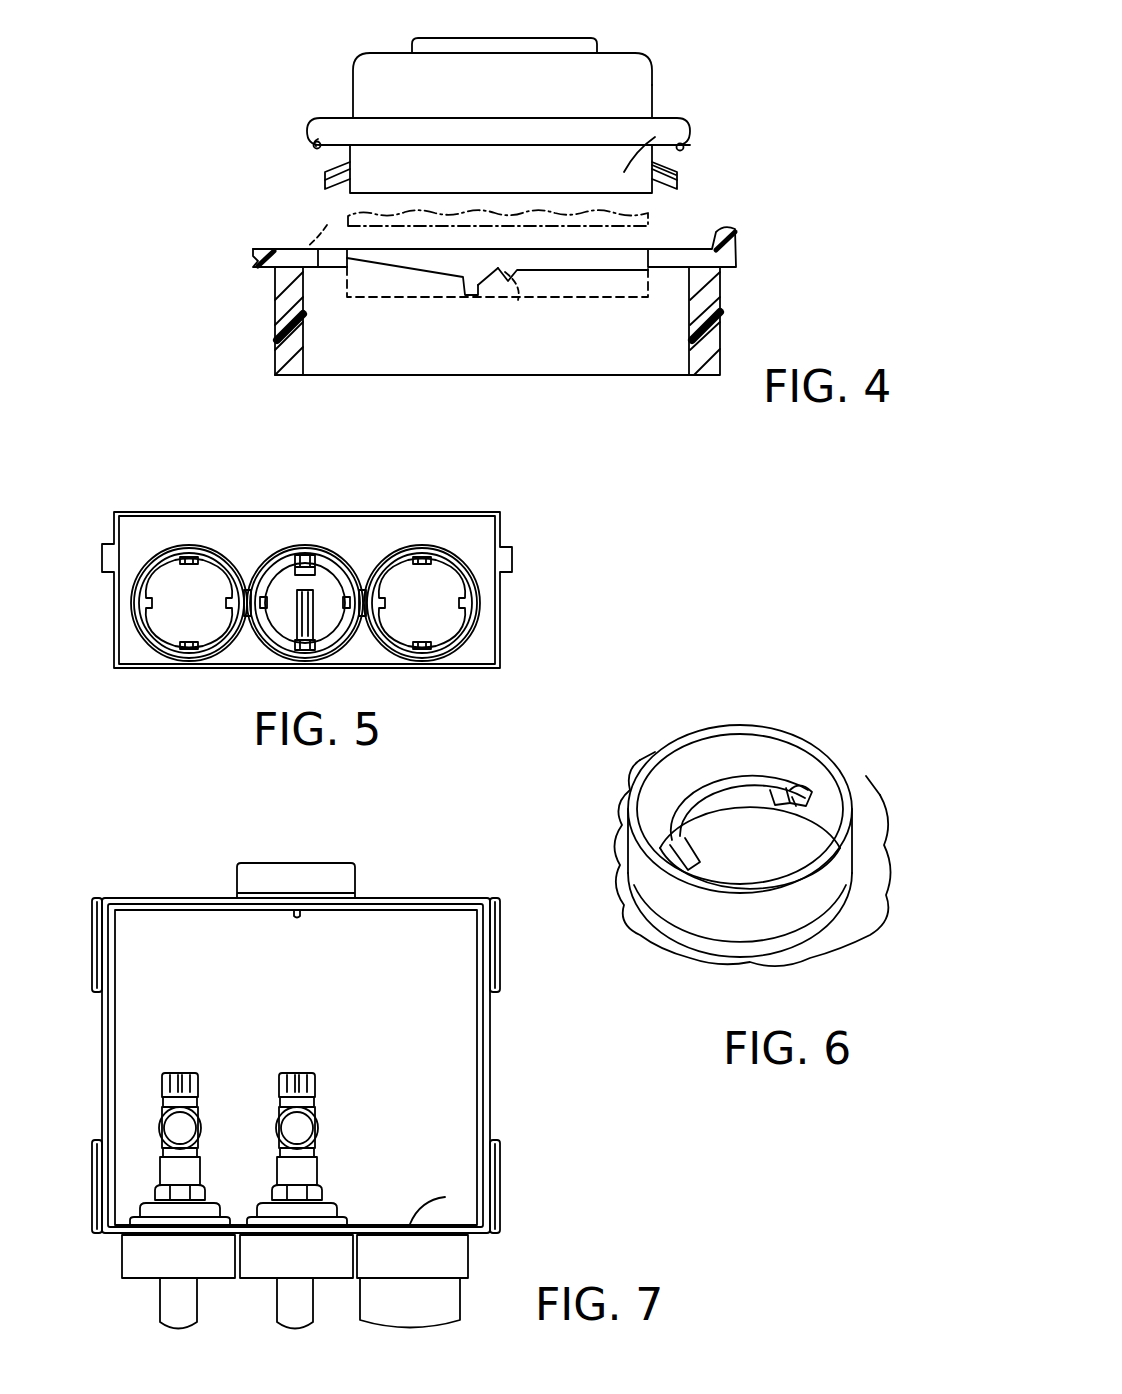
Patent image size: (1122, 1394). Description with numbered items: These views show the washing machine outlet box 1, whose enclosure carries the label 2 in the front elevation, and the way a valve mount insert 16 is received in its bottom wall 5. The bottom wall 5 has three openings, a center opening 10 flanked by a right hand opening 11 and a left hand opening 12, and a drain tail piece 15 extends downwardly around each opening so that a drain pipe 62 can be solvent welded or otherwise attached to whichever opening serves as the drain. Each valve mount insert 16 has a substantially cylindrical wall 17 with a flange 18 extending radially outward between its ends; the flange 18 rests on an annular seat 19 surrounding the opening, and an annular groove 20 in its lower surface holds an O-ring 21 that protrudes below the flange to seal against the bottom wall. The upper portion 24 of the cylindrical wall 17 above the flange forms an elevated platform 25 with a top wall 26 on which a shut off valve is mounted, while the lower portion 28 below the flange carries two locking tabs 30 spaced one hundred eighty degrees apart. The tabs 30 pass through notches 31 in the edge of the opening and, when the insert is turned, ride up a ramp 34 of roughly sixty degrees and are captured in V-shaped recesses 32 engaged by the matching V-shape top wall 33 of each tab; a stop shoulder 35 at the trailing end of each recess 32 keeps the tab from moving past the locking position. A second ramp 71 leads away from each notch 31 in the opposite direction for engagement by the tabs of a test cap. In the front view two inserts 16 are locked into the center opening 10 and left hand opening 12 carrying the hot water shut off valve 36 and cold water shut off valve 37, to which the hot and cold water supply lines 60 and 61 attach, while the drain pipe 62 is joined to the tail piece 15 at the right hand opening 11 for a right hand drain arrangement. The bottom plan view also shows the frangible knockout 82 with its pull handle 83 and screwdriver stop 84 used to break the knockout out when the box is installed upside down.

In FIG. 4, the washing machine outlet box 1 is at (752, 322).
In FIG. 5, the washing machine outlet box 1 is at (118, 505).
In FIG. 7, the washing machine outlet box 1 is at (97, 893).
In FIG. 7, the box 2 is at (437, 893).
In FIG. 4, the bottom wall 5 is at (258, 246).
In FIG. 5, the bottom wall 5 is at (236, 512).
In FIG. 6, the bottom wall 5 is at (665, 958).
In FIG. 7, the bottom wall 5 is at (445, 1197).
In FIG. 5, the center opening 10 is at (323, 618).
In FIG. 6, the center opening 10 is at (765, 862).
In FIG. 7, the center opening 10 is at (268, 1231).
In FIG. 4, the right hand opening 11 is at (366, 254).
In FIG. 5, the right hand opening 11 is at (442, 618).
In FIG. 7, the right hand opening 11 is at (420, 1236).
In FIG. 5, the left hand opening 12 is at (182, 622).
In FIG. 7, the left hand opening 12 is at (165, 1231).
In FIG. 4, the drain tail piece 15 is at (290, 312).
In FIG. 6, the drain tail piece 15 is at (830, 738).
In FIG. 7, the drain tail piece 15 is at (450, 1268).
In FIG. 4, the valve mount insert 16 is at (332, 63).
In FIG. 7, the valve mount insert 16 is at (252, 1114).
In FIG. 4, the cylindrical wall 17 is at (655, 98).
In FIG. 4, the flange 18 is at (672, 128).
In FIG. 4, the annular seat 19 is at (725, 256).
In FIG. 4, the annular groove 20 is at (310, 121).
In FIG. 4, the O-ring 21 is at (315, 148).
In FIG. 4, the upper portion 24 is at (362, 90).
In FIG. 4, the elevated platform 25 is at (634, 70).
In FIG. 4, the top wall 26 is at (582, 38).
In FIG. 4, the lower portion 28 is at (655, 137).
In FIG. 4, the locking tab 30 is at (332, 180).
In FIG. 4, the notch 31 is at (332, 268).
In FIG. 6, the notch 31 is at (690, 792).
In FIG. 4, the recess 32 is at (500, 276).
In FIG. 6, the recess 32 is at (795, 797).
In FIG. 4, the V-shape top wall 33 is at (680, 175).
In FIG. 4, the ramp 34 is at (527, 273).
In FIG. 6, the ramp 34 is at (800, 798).
In FIG. 4, the stop shoulder 35 is at (470, 288).
In FIG. 6, the stop shoulder 35 is at (777, 792).
In FIG. 7, the hot water shut off valve 36 is at (142, 1098).
In FIG. 7, the cold water shut off valve 37 is at (330, 1108).
In FIG. 7, the hot water supply line 60 is at (160, 1302).
In FIG. 7, the cold water supply line 61 is at (308, 1302).
In FIG. 7, the drain pipe 62 is at (445, 1308).
In FIG. 4, the second ramp 71 is at (400, 270).
In FIG. 6, the second ramp 71 is at (715, 835).
In FIG. 5, the frangible knockout 82 is at (285, 622).
In FIG. 5, the pull handle 83 is at (312, 612).
In FIG. 5, the screwdriver stop 84 is at (313, 566).